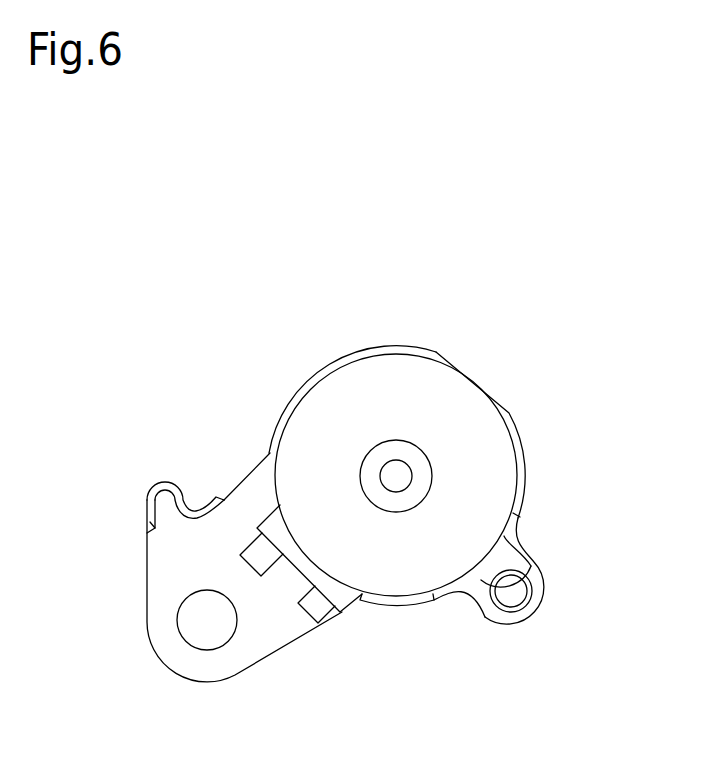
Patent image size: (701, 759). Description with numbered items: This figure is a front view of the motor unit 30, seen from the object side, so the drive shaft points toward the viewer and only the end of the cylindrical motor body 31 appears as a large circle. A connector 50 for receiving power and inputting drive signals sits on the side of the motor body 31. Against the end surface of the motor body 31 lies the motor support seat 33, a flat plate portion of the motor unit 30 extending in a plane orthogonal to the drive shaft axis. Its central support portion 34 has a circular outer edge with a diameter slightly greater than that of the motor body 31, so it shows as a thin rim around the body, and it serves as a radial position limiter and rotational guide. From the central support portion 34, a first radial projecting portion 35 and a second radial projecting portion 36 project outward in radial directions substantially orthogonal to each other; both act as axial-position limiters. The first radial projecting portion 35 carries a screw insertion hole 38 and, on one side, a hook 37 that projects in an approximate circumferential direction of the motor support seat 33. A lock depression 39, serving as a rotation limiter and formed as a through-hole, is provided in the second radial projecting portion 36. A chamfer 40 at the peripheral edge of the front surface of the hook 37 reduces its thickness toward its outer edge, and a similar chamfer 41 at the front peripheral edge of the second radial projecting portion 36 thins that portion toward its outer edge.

The motor unit 30 is at (499, 372).
The motor body 31 is at (493, 444).
The motor support seat 33 is at (308, 373).
The central support portion 34 is at (367, 348).
The first radial projecting portion 35 is at (160, 585).
The second radial projecting portion 36 is at (477, 588).
The hook 37 is at (170, 506).
The screw insertion hole 38 is at (190, 633).
The lock depression 39 is at (513, 587).
The chamfer 40 is at (152, 505).
The chamfer 41 is at (530, 618).
The connector 50 is at (313, 615).